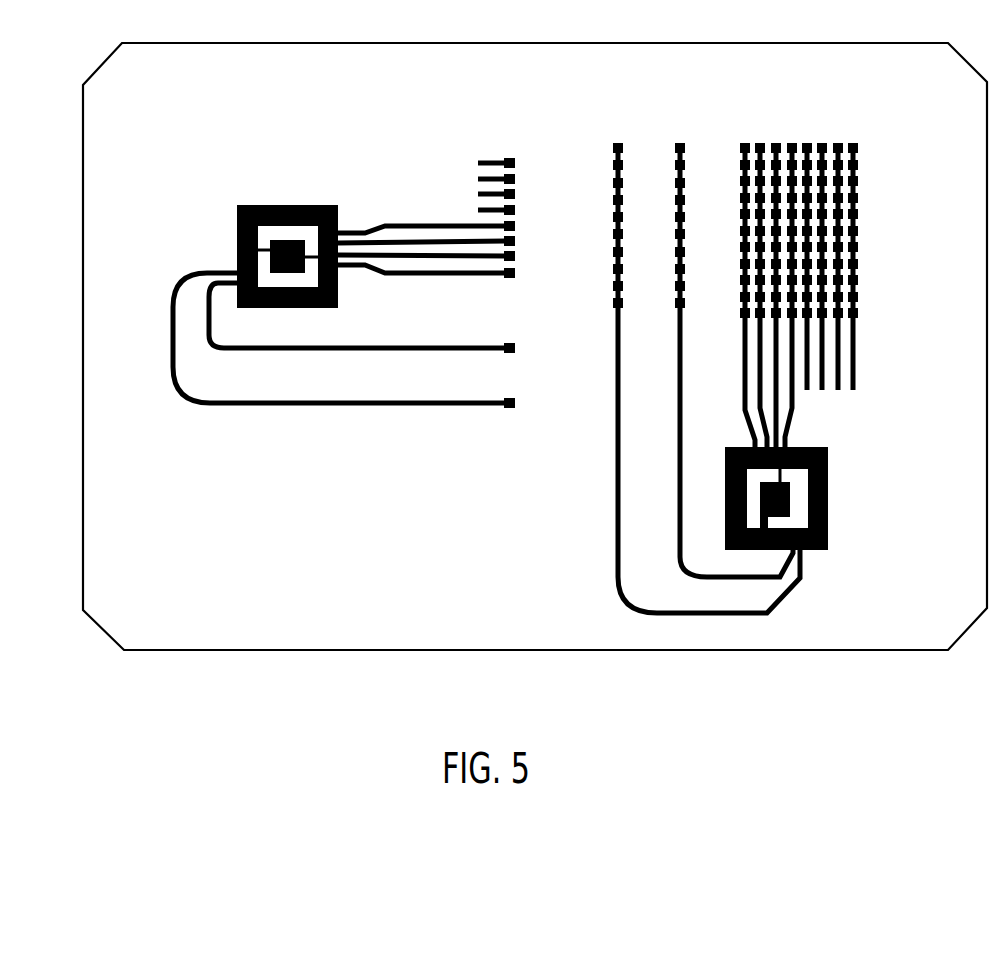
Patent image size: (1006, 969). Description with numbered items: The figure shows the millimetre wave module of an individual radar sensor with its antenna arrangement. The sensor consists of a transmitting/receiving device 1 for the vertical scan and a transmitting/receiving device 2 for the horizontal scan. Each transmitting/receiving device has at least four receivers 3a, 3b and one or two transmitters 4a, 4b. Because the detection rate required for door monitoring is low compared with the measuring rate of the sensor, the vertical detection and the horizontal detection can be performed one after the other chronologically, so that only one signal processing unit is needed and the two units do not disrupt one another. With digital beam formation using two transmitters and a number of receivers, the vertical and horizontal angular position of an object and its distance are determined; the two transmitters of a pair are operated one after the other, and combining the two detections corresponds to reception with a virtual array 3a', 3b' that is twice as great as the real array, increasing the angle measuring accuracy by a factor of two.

The transmitting/receiving device for the vertical scan 1 is at (287, 227).
The transmitting/receiving device for the horizontal scan 2 is at (812, 498).
The receivers 3a is at (450, 249).
The virtual array 3a' is at (521, 186).
The transmitters 4a is at (369, 340).
The transmitters 4b is at (706, 352).
The receivers 3b is at (768, 269).
The virtual array 3b' is at (830, 240).